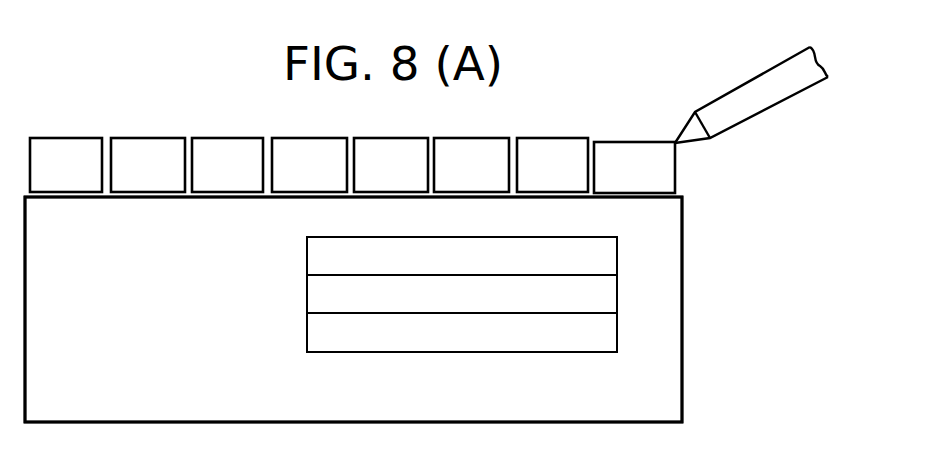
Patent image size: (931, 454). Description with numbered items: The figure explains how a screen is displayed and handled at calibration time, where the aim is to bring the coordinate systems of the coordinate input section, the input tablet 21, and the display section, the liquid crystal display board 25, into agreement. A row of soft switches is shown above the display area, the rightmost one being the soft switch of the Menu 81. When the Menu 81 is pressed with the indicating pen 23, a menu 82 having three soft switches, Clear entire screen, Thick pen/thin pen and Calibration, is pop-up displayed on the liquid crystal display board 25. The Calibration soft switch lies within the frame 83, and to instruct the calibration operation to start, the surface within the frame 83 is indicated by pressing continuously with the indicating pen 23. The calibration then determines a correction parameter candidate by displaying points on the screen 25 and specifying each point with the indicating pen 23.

The soft switch of the Menu 81 is at (627, 141).
The menu 82 is at (617, 291).
The frame 83 is at (307, 332).
The indicating pen 23 is at (757, 100).
The input tablet 21 is at (673, 343).
The liquid crystal display board 25 is at (673, 343).